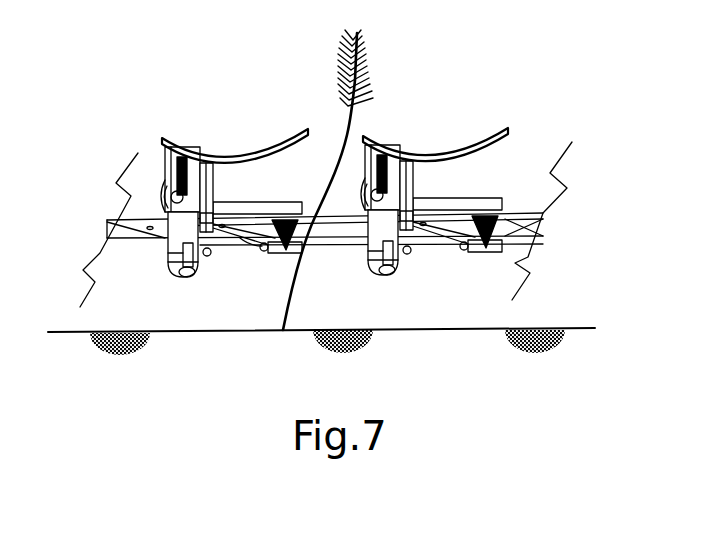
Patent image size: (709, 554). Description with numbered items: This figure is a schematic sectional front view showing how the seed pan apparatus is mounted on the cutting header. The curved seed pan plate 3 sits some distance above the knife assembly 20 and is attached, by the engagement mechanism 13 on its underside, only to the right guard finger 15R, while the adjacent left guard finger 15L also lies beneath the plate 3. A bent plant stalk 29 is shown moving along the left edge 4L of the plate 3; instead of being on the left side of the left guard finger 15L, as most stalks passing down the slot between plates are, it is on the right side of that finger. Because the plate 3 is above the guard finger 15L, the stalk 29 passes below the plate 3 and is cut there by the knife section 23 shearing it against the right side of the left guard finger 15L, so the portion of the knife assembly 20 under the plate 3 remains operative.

The seed pan plate 3 is at (302, 140).
The left edge 4L is at (513, 124).
The engagement mechanism 13 is at (162, 164).
The right guard finger 15R is at (163, 257).
The left guard finger 15L is at (413, 234).
The knife assembly 20 is at (580, 208).
The knife section 23 is at (236, 243).
The plant stalk 29 is at (357, 105).